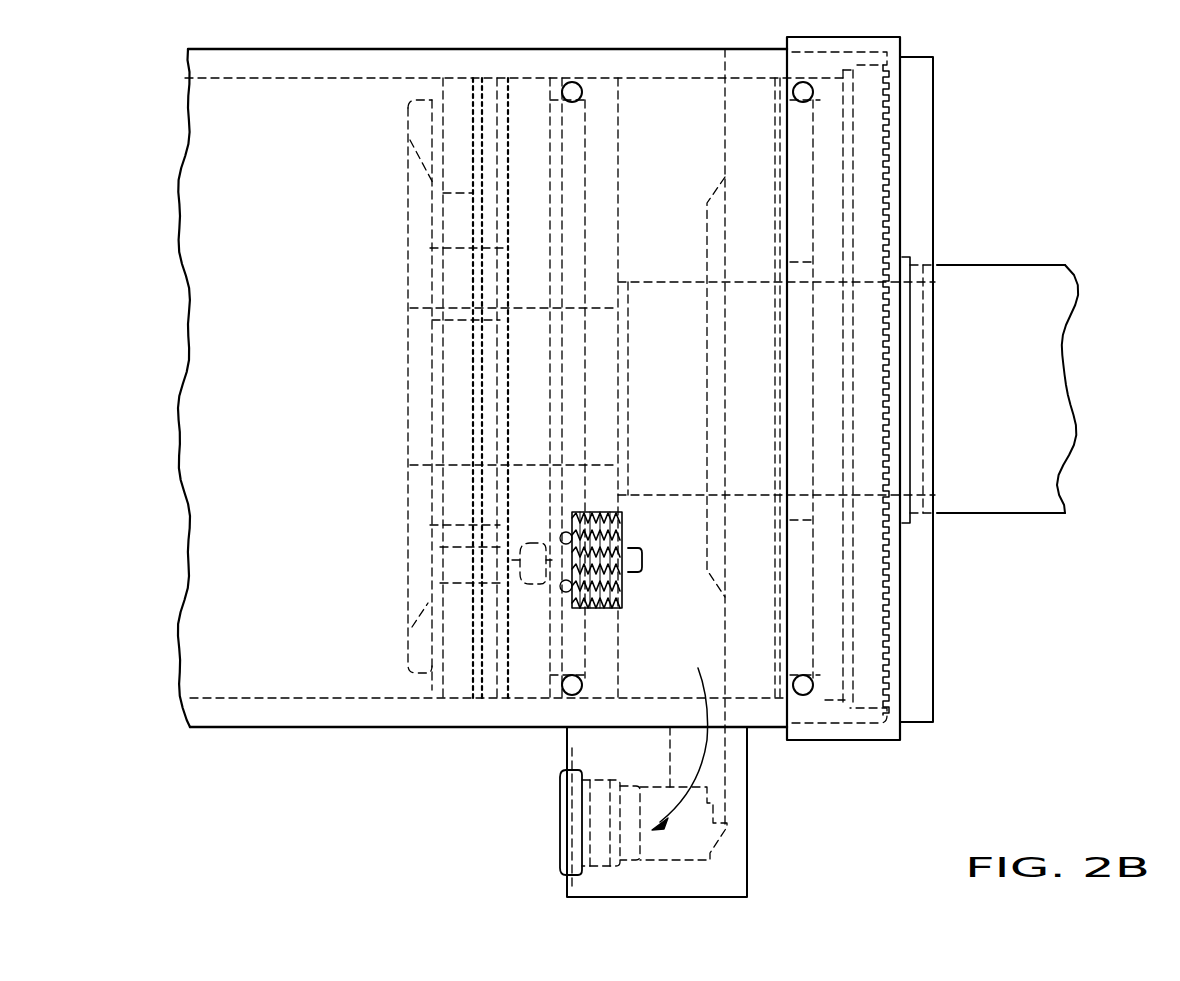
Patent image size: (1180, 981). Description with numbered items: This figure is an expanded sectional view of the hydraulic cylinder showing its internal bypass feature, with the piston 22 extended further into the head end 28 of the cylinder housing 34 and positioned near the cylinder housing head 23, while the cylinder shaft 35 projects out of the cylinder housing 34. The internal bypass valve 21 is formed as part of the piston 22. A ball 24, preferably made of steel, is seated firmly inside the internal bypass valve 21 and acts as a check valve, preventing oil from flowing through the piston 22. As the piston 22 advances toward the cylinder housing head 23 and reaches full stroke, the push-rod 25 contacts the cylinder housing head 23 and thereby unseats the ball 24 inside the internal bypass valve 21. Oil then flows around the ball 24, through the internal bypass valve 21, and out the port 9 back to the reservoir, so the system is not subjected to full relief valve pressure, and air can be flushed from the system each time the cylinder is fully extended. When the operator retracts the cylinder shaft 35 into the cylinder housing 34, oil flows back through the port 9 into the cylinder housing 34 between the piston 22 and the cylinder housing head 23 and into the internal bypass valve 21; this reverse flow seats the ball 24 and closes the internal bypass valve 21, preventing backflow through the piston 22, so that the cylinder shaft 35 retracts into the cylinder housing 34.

The port 9 is at (560, 823).
The internal bypass valve 21 is at (630, 533).
The piston 22 is at (525, 250).
The cylinder housing head 23 is at (833, 613).
The ball 24 is at (542, 557).
The push-rod 25 is at (642, 558).
The head end 28 is at (400, 733).
The cylinder housing 34 is at (305, 730).
The cylinder shaft 35 is at (1030, 515).